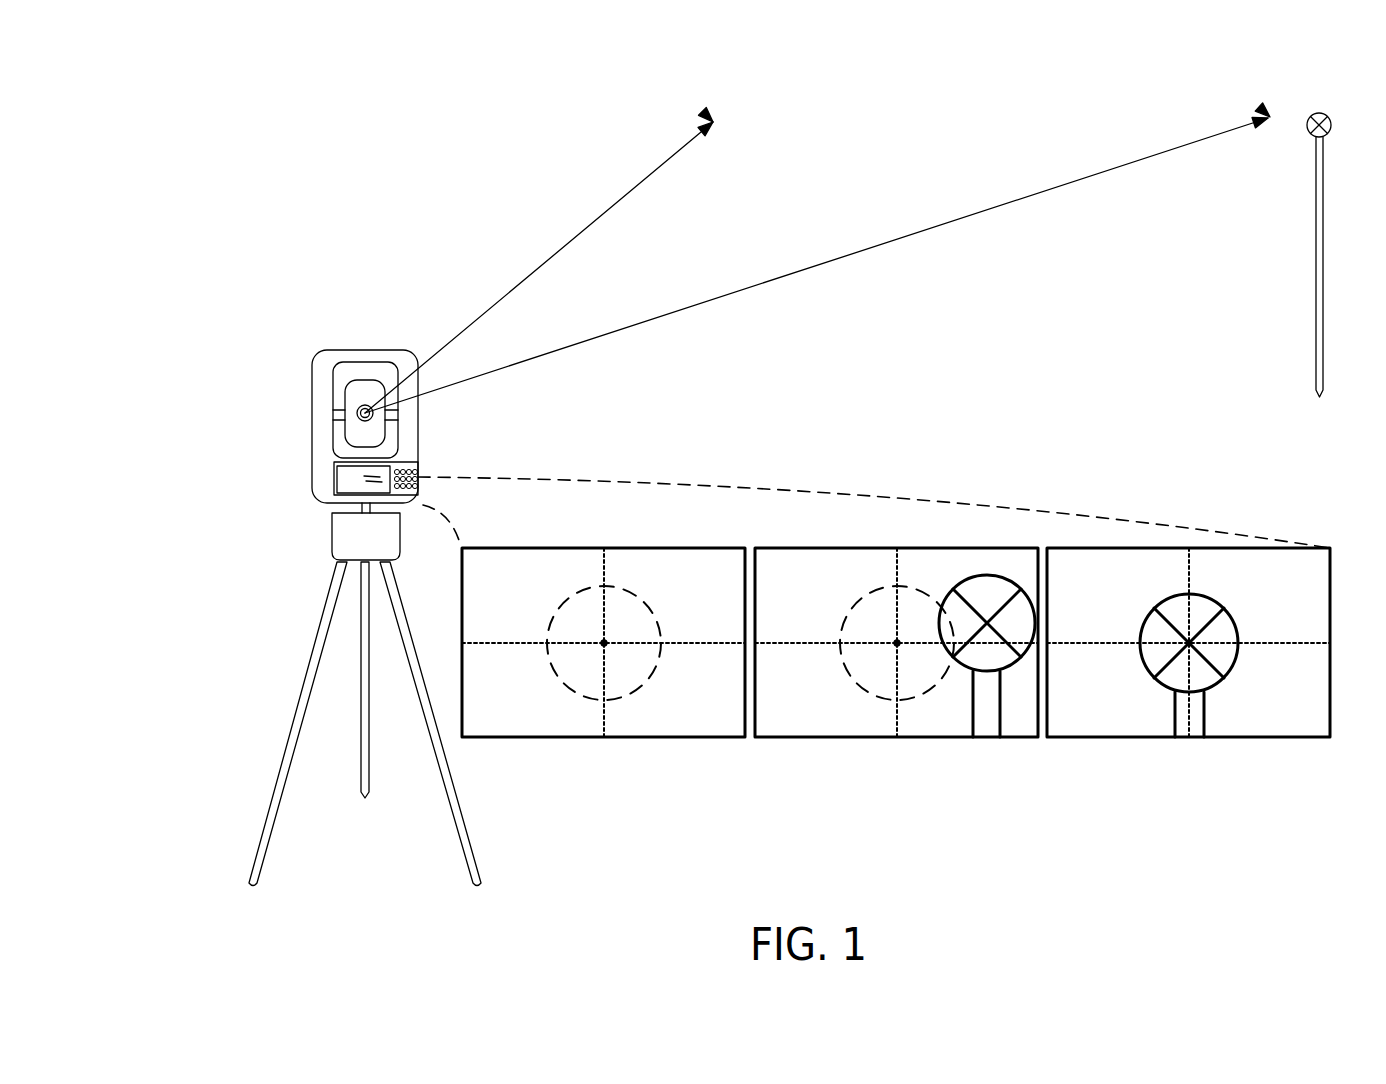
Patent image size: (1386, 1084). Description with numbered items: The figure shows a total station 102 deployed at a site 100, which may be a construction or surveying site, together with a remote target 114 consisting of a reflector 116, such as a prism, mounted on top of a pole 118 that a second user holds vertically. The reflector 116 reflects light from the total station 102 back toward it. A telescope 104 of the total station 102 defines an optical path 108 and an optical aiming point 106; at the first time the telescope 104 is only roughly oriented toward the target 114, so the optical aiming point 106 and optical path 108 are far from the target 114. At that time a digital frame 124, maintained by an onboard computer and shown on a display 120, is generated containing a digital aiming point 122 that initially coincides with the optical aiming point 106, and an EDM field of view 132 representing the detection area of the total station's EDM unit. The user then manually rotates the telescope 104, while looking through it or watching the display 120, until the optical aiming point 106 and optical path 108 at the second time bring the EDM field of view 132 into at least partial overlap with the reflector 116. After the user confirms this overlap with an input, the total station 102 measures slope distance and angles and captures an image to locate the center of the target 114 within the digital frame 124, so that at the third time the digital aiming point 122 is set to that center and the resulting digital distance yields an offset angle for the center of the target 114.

The site 100 is at (320, 97).
The total station 102 is at (343, 348).
The telescope 104 is at (352, 429).
The optical aiming point 106 is at (713, 122).
The optical path 108 is at (643, 180).
The target 114 is at (1135, 417).
The reflector 116 is at (1310, 113).
The pole 118 is at (1316, 265).
The display 120 is at (352, 487).
The digital aiming point 122 is at (604, 643).
The digital frame 124 is at (668, 548).
The EDM field of view 132 is at (650, 680).